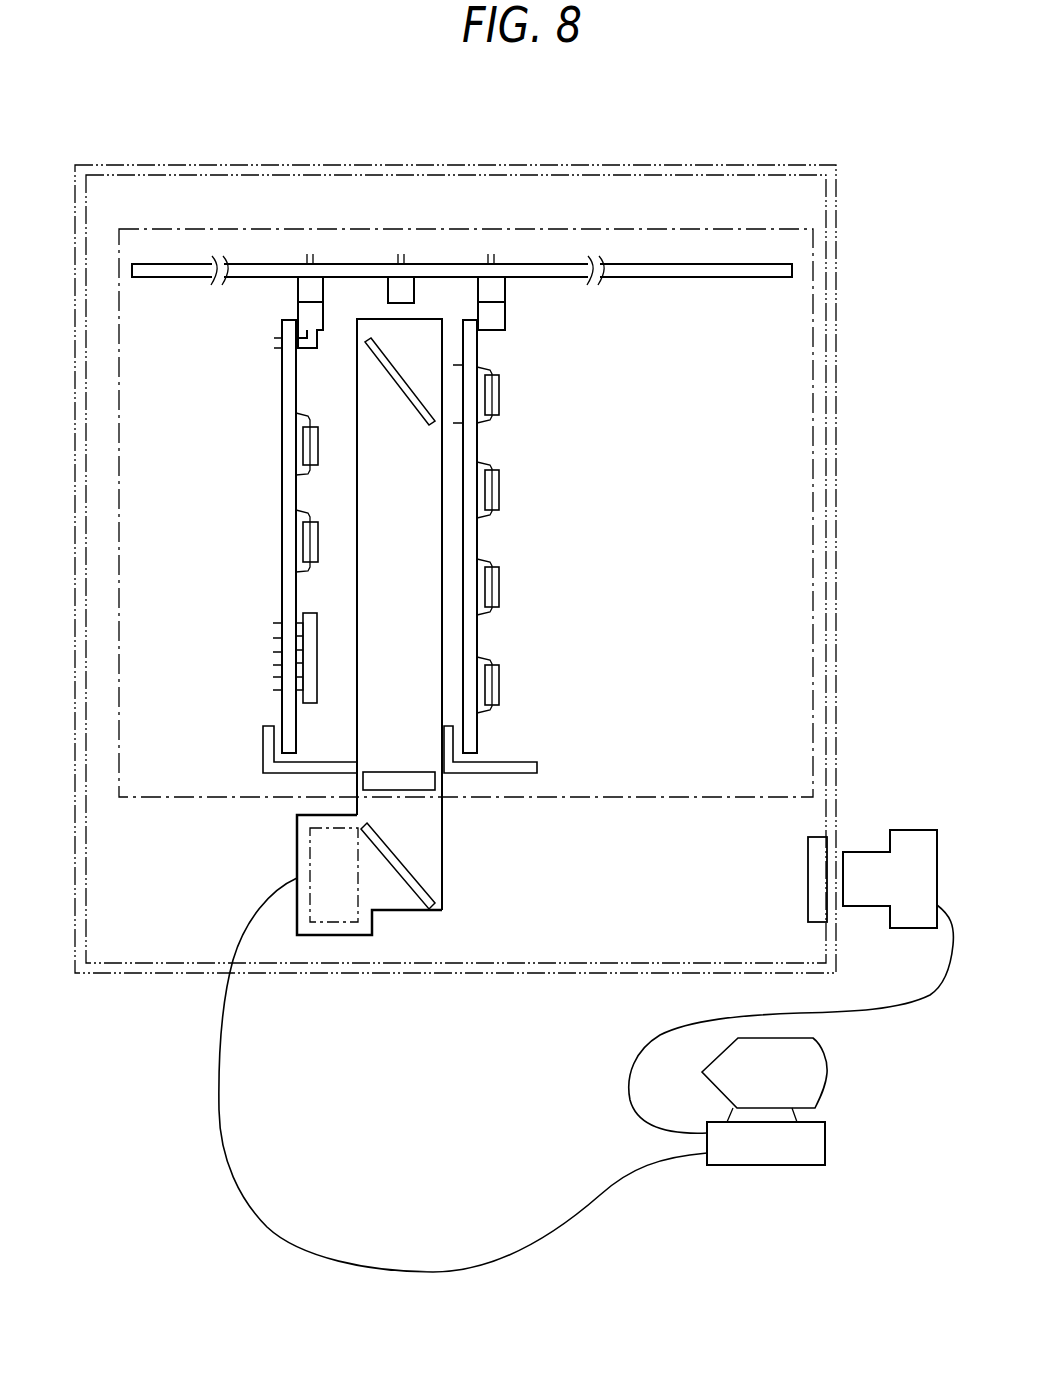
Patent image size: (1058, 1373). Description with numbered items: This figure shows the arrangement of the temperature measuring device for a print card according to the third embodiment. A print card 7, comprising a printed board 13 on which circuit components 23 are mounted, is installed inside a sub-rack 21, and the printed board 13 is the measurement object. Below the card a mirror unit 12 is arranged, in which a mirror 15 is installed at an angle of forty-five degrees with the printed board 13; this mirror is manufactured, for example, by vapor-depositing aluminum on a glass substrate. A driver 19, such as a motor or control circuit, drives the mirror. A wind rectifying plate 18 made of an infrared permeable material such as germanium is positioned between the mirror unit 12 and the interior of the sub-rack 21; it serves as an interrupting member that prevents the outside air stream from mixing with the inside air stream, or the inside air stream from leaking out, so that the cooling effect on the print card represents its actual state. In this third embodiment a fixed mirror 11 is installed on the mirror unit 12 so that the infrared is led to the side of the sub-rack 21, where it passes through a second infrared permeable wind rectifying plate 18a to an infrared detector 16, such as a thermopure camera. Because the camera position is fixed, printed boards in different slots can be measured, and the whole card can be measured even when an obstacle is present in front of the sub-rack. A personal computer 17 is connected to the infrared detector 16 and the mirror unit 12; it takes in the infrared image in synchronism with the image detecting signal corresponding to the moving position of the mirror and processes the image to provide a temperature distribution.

The print card 7 is at (281, 413).
The fixed mirror 11 is at (397, 880).
The mirror unit 12 is at (327, 935).
The printed board 13 is at (281, 709).
The mirror 15 is at (408, 386).
The infrared detector 16 is at (864, 852).
The personal computer 17 is at (750, 1165).
The wind rectifying plate 18 is at (407, 780).
The wind rectifying plate 18a is at (808, 848).
The driver 19 is at (318, 851).
The sub-rack 21 is at (702, 230).
The circuit component 23 is at (303, 445).